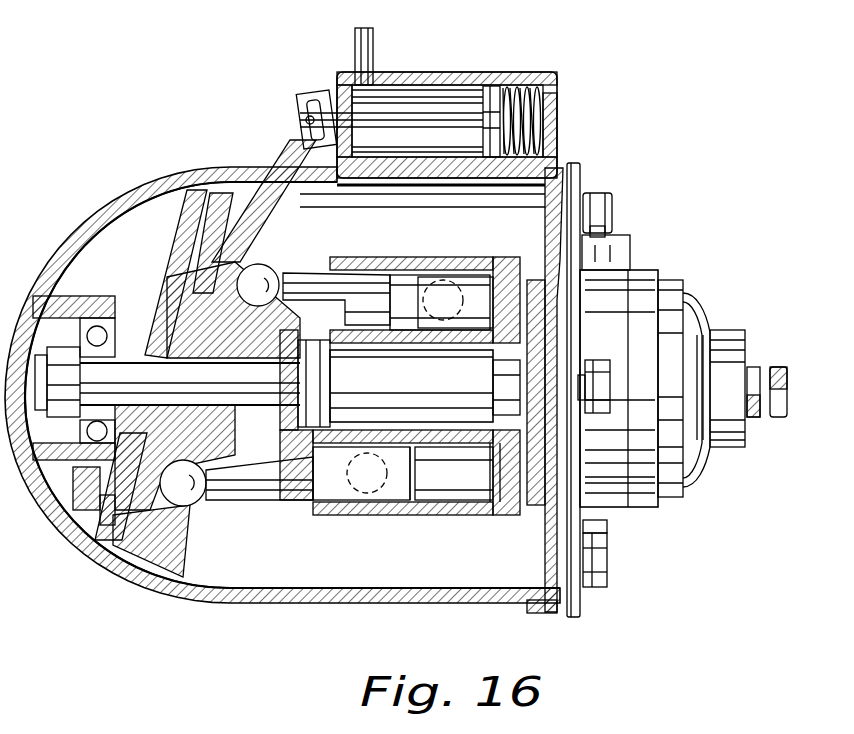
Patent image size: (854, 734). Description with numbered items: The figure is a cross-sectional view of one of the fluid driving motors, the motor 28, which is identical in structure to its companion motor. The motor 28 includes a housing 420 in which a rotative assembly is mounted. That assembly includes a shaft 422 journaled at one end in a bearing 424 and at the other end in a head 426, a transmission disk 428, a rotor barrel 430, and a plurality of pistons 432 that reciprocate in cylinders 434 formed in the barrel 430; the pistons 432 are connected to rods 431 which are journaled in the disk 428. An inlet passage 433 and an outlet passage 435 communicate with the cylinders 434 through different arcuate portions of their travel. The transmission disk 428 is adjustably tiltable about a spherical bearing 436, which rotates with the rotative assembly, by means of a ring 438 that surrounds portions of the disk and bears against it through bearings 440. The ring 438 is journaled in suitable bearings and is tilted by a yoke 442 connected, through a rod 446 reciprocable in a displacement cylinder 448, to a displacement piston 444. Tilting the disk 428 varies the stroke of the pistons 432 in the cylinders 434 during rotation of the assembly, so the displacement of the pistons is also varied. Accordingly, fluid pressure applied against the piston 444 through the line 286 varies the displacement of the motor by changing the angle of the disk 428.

The driving motor 28 is at (277, 607).
The line 286 is at (362, 43).
The housing 420 is at (403, 600).
The shaft 422 is at (137, 377).
The bearing 424 is at (87, 327).
The head 426 is at (585, 195).
The transmission disk 428 is at (172, 252).
The rotor barrel 430 is at (475, 257).
The rods 431 is at (340, 283).
The pistons 432 is at (423, 273).
The inlet passage 433 is at (510, 320).
The cylinders 434 is at (470, 258).
The outlet passage 435 is at (510, 477).
The spherical bearing 436 is at (240, 435).
The ring 438 is at (317, 220).
The bearings 440 is at (268, 192).
The yoke 442 is at (300, 118).
The displacement piston 444 is at (493, 92).
The rod 446 is at (408, 120).
The displacement cylinder 448 is at (433, 73).